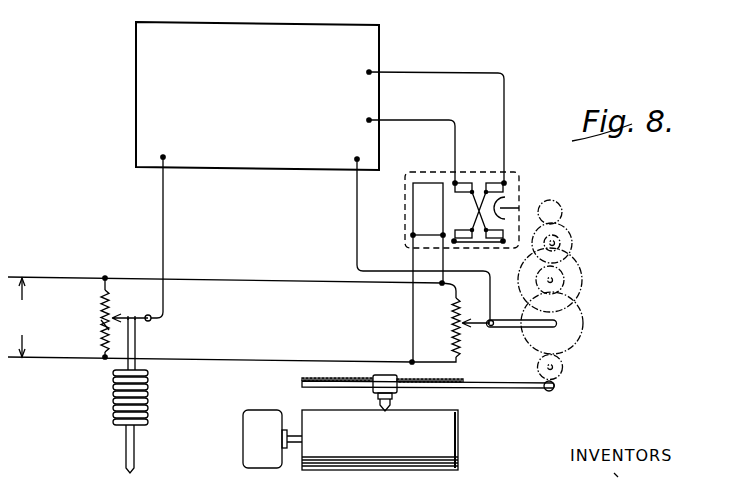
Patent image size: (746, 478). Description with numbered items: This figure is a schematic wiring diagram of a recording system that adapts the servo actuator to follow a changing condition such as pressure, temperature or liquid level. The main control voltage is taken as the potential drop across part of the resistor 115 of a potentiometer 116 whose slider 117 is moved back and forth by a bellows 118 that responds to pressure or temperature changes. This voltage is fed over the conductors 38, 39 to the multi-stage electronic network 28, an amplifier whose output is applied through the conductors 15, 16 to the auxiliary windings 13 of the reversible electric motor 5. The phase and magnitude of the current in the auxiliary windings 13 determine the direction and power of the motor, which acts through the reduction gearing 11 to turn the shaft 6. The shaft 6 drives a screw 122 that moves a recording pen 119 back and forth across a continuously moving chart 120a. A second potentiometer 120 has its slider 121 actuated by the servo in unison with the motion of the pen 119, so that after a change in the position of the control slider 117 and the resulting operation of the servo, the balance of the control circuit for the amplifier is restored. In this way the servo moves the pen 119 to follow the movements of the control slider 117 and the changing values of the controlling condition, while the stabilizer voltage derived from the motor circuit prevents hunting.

The reversible electric motor 5 is at (474, 253).
The shaft 6 is at (509, 325).
The reduction gearing 11 is at (578, 248).
The auxiliary windings 13 is at (492, 183).
The conductor 15 is at (428, 108).
The conductor 16 is at (484, 74).
The multi-stage electronic network 28 is at (258, 168).
The conductor 38 is at (167, 224).
The conductor 39 is at (354, 228).
The resistor 115 is at (102, 302).
The potentiometer 116 is at (96, 325).
The slider 117 is at (125, 316).
The bellows 118 is at (113, 401).
The recording pen 119 is at (393, 399).
The potentiometer 120 is at (467, 343).
The chart 120a is at (460, 428).
The slider 121 is at (471, 318).
The screw 122 is at (513, 390).